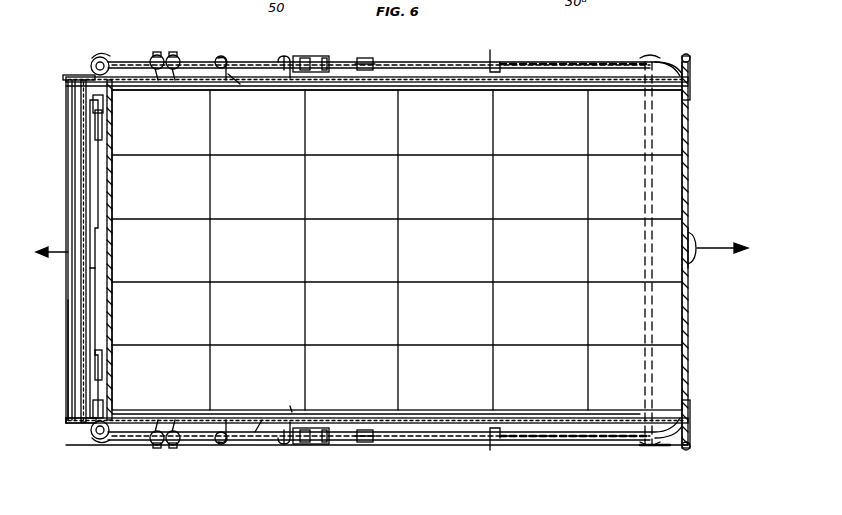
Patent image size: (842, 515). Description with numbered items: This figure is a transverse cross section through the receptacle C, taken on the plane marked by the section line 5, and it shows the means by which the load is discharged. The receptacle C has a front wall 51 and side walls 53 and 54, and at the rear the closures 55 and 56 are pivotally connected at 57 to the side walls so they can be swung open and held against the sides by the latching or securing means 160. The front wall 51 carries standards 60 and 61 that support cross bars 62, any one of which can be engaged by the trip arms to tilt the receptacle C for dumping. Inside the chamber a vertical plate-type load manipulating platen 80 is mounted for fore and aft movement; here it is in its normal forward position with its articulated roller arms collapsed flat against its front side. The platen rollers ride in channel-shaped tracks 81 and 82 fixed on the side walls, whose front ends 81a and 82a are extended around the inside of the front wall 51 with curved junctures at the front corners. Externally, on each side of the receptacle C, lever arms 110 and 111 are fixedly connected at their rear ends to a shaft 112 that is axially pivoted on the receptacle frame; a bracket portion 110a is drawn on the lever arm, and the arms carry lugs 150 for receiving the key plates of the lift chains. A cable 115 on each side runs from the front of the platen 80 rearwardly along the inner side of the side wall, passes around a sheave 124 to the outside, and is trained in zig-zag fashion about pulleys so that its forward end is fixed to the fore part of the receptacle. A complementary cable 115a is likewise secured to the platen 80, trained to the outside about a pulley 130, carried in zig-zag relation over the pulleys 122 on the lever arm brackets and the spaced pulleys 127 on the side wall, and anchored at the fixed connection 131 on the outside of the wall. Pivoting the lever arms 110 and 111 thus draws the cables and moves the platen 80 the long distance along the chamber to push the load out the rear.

The section line 5- 5 is at (387, 248).
The front wall 51 is at (80, 196).
The side wall 53 is at (372, 414).
The side wall 54 is at (468, 86).
The rear closure 55 is at (690, 336).
The rear closure 56 is at (688, 200).
The pivotal connection 57 is at (692, 60).
The standard 60 is at (65, 82).
The standard 61 is at (66, 418).
The cross bar 62 is at (68, 345).
The load manipulating platen 80 is at (108, 256).
The track 81 is at (298, 406).
The front end of track 81a is at (98, 318).
The track 82 is at (326, 86).
The front end of track 82a is at (98, 205).
The lever arm 110 is at (418, 430).
The rail bracket 110a is at (308, 56).
The lever arm 111 is at (400, 86).
The shaft 112 is at (652, 448).
The cable 115 is at (560, 86).
The complementary cable 115a is at (232, 84).
The sheave or pulley 122 is at (160, 54).
The sheave or pulley 124 is at (672, 62).
The sheave or pulley 127 is at (216, 62).
The sheave or pulley 130 is at (93, 60).
The fixed connection 131 is at (282, 74).
The lug 150 is at (370, 58).
The latching or securing means 160 is at (491, 52).
The receptacle C is at (178, 436).